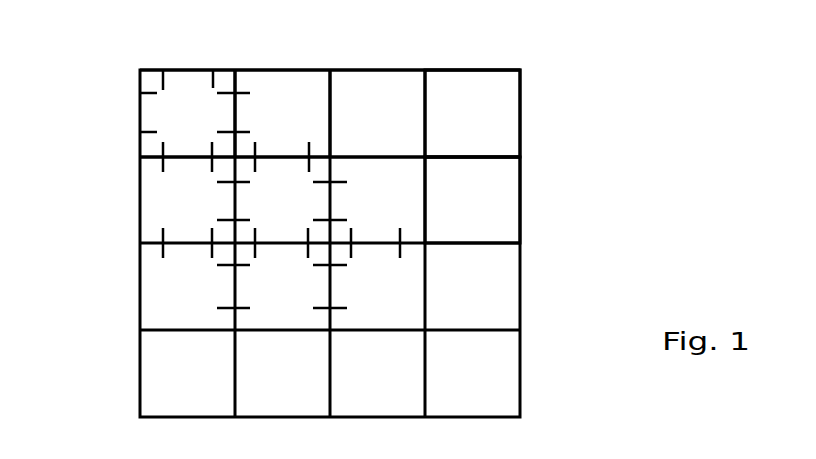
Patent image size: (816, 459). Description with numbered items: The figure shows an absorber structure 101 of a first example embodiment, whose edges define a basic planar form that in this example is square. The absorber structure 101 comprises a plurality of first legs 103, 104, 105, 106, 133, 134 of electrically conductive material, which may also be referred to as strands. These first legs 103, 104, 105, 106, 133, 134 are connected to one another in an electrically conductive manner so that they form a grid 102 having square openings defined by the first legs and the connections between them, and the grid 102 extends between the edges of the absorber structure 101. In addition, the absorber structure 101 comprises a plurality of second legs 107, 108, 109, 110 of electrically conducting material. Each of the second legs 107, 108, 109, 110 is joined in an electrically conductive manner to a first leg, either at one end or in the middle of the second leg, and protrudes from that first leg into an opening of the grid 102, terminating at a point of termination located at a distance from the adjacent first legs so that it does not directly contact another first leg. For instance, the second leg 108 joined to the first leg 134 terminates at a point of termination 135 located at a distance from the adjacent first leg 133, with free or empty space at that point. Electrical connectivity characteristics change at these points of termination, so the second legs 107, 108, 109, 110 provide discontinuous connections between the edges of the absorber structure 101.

The absorber structure 101 is at (745, 64).
The grid 102 is at (553, 248).
The first leg 103 is at (463, 69).
The first leg 104 is at (447, 156).
The first leg 105 is at (520, 117).
The first leg 106 is at (520, 203).
The second leg 107 is at (163, 82).
The second leg 108 is at (222, 93).
The second leg 109 is at (163, 162).
The second leg 110 is at (220, 182).
The first leg 133 is at (330, 103).
The first leg 134 is at (237, 117).
The point of termination 135 is at (248, 93).